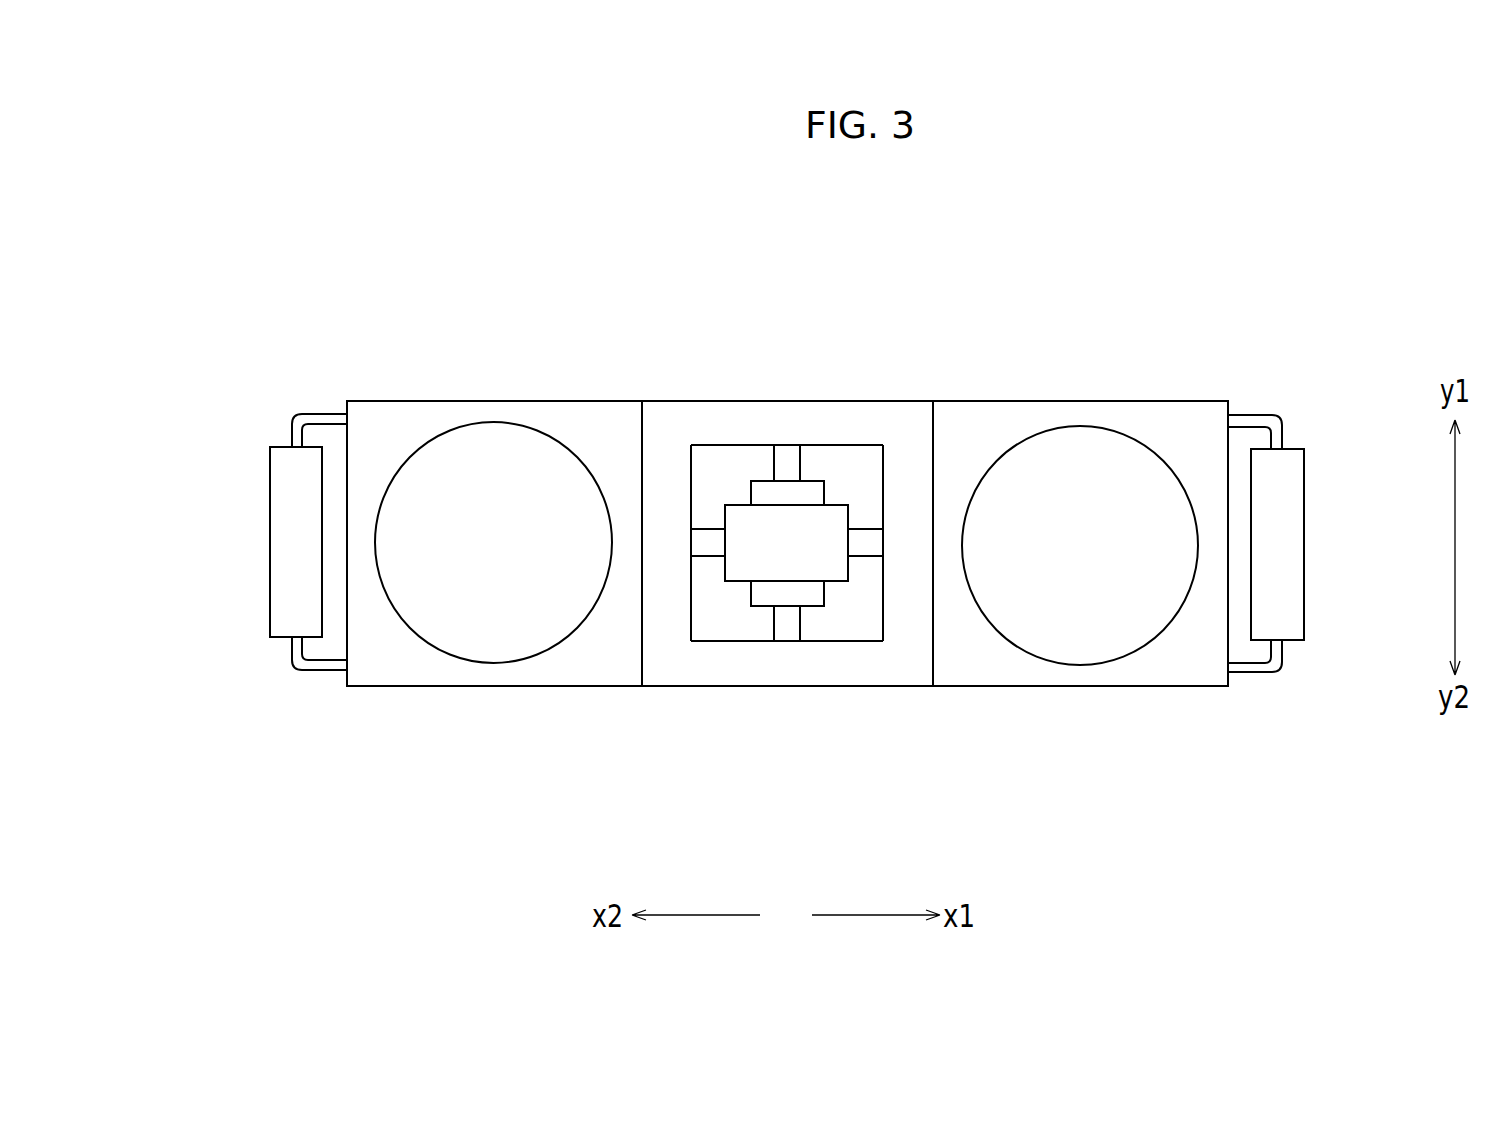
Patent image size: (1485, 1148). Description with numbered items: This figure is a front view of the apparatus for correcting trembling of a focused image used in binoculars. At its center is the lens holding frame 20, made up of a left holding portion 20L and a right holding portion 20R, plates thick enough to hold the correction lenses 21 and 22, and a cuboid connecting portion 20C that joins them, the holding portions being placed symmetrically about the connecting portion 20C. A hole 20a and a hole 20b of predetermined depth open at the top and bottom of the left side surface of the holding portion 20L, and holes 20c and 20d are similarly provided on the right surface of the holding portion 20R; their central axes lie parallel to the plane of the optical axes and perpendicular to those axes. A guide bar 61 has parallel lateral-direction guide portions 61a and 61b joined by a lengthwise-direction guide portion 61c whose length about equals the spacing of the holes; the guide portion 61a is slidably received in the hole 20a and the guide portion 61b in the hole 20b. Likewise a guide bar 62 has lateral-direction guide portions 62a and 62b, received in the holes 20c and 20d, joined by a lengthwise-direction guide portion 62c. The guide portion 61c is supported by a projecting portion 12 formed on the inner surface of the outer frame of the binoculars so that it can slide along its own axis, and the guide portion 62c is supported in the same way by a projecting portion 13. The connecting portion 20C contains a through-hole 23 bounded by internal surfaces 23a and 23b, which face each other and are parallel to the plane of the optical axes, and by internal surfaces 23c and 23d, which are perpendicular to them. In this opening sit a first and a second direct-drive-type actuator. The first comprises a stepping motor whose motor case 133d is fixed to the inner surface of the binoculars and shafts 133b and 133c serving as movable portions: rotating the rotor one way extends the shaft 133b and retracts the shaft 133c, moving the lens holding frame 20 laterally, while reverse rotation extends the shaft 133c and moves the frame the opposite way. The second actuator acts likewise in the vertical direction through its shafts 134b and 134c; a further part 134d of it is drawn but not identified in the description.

The projecting portion 12 is at (285, 537).
The projecting portion 13 is at (1287, 540).
The lens holding frame 20 is at (952, 375).
The holding portion 20L is at (460, 418).
The connecting portion 20C is at (762, 663).
The holding portion 20R is at (1035, 415).
The hole 20a is at (342, 418).
The hole 20b is at (337, 673).
The hole 20c is at (1240, 418).
The hole 20d is at (1235, 673).
The correction lens 21 is at (493, 626).
The correction lens 22 is at (1078, 635).
The through-hole 23 is at (796, 535).
The internal surface 23a is at (842, 452).
The internal surface 23b is at (720, 643).
The internal surface 23c is at (878, 463).
The internal surface 23d is at (693, 473).
The shaft 133b is at (867, 547).
The shaft 133c is at (703, 542).
The motor case 133d is at (825, 570).
The shaft 134b is at (787, 460).
The shaft 134c is at (786, 612).
The upper projection 134d is at (767, 490).
The guide bar 61 is at (252, 535).
The lateral-direction guide portion 61a is at (318, 413).
The lateral-direction guide portion 61b is at (317, 668).
The lengthwise-direction guide portion 61c is at (287, 430).
The guide bar 62 is at (1323, 535).
The lateral-direction guide portion 62a is at (1257, 418).
The lateral-direction guide portion 62b is at (1255, 673).
The lengthwise-direction guide portion 62c is at (1282, 438).